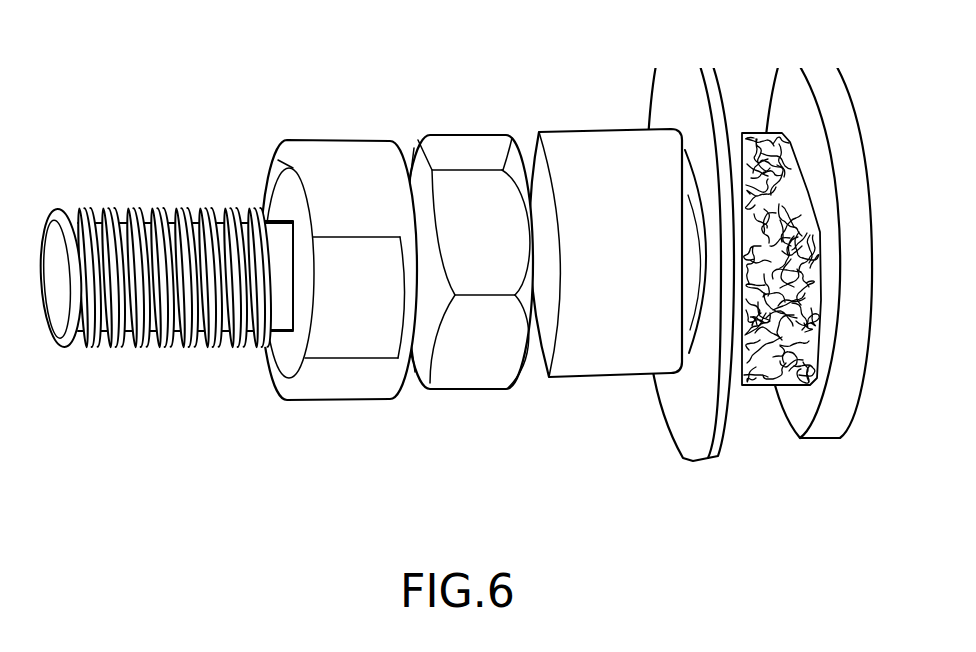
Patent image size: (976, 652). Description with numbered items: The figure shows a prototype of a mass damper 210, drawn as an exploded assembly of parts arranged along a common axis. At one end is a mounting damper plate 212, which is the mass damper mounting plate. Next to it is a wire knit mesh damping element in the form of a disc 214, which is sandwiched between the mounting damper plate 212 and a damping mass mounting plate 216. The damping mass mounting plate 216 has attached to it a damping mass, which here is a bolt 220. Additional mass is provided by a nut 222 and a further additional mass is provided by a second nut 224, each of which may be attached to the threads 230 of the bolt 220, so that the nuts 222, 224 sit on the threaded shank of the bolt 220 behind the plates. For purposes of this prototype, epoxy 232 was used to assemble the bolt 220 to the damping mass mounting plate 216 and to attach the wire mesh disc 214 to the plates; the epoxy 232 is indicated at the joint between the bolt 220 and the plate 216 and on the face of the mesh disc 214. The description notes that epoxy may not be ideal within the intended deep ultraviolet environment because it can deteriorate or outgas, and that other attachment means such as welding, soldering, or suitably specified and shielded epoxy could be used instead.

The mass damper 210 is at (475, 279).
The mounting damper plate 212 is at (853, 308).
The wire knit mesh damping element disc 214 is at (760, 396).
The damping mass mounting plate 216 is at (688, 432).
The bolt 220 is at (602, 361).
The nut 222 is at (438, 148).
The nut 224 is at (287, 163).
The threads 230 is at (162, 355).
The epoxy 232 is at (692, 203).